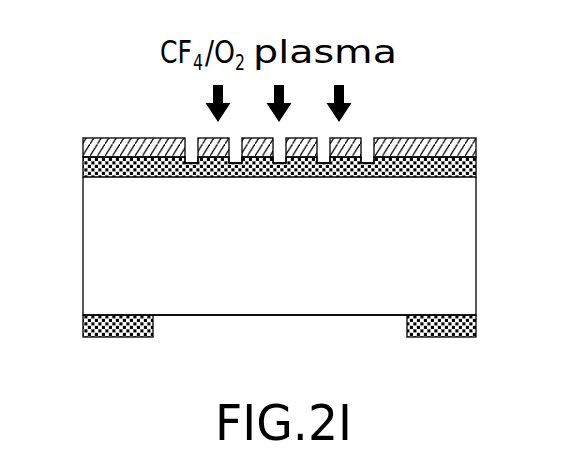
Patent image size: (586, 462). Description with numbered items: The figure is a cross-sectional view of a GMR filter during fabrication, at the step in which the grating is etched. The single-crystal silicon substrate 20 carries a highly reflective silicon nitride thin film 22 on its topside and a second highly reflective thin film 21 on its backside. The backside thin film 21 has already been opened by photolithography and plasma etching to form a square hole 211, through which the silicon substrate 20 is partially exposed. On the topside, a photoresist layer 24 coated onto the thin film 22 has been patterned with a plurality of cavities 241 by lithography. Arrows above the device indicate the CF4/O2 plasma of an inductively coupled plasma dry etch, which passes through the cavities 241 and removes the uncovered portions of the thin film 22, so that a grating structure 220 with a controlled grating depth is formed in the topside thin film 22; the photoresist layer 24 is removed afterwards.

The single-crystal silicon substrate 20 is at (458, 252).
The highly reflective thin film 21 is at (95, 323).
The square hole 211 is at (348, 327).
The highly reflective thin film 22 is at (98, 165).
The grating structure 220 is at (187, 160).
The photoresist layer 24 is at (445, 150).
The cavities 241 is at (368, 140).